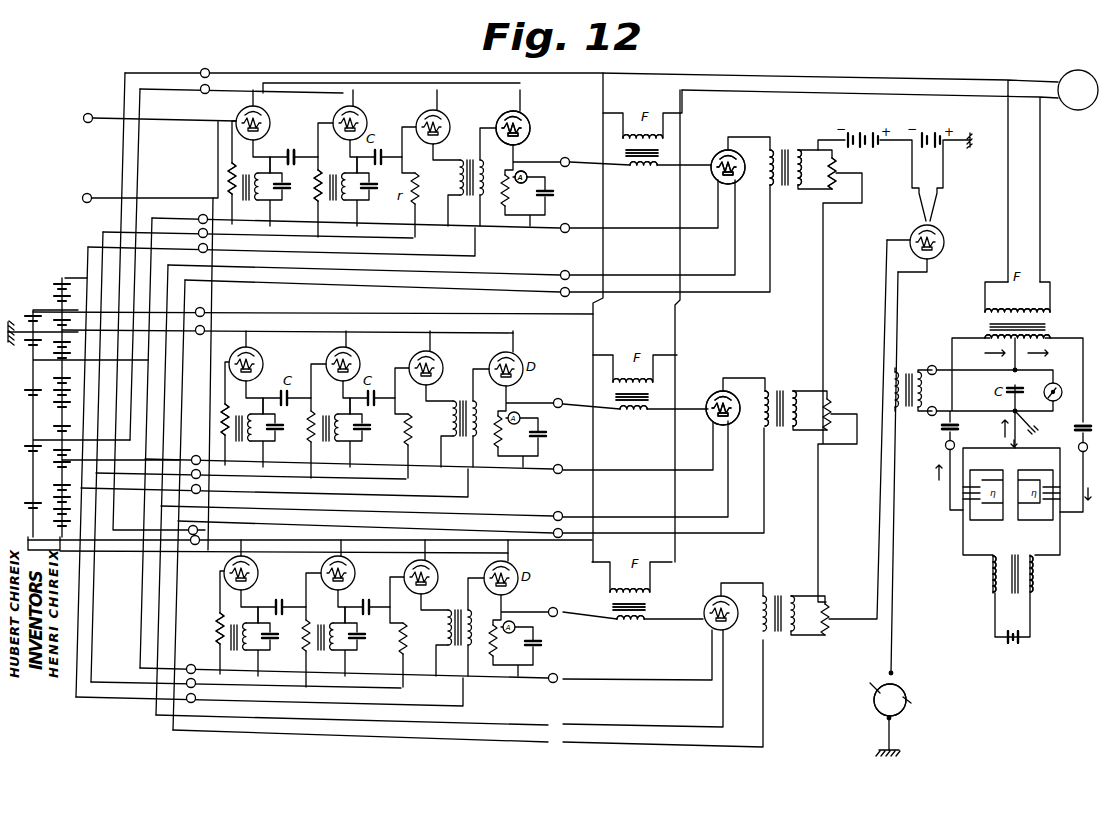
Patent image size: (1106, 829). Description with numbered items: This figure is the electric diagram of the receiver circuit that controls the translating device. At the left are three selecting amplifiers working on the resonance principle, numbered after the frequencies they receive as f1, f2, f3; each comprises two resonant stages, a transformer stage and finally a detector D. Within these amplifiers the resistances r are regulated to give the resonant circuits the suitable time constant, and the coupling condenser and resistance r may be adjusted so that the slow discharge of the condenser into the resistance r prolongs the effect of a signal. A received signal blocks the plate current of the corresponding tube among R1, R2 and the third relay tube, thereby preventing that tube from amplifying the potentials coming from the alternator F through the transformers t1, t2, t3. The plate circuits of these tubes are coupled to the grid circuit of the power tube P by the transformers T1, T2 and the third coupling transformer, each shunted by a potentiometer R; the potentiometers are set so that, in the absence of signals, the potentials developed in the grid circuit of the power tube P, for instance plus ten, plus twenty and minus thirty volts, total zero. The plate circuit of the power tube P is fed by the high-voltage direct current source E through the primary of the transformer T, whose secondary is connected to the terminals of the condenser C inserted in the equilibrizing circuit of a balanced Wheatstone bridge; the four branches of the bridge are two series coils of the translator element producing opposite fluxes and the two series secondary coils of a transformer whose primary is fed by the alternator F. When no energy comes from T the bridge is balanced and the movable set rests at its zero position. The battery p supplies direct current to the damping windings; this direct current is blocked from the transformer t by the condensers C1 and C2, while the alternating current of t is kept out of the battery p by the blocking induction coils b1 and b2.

The resonance amplifier for first frequency f1 is at (218, 178).
The resonance amplifier for second frequency f2 is at (212, 413).
The resonance amplifier for third frequency f3 is at (209, 628).
The condenser C is at (291, 147).
The resistance r is at (312, 185).
The detector D is at (519, 128).
The ammeter A is at (521, 177).
The transformer t1 is at (643, 167).
The transformer t2 is at (633, 409).
The transformer t3 is at (630, 618).
The tube R1 is at (738, 168).
The tube R2 is at (734, 413).
The transformer T1 is at (786, 158).
The transformer T2 is at (781, 399).
The potentiometer R is at (825, 173).
The power tube P is at (933, 242).
The alternator F is at (1078, 90).
The transformer t is at (1017, 315).
The transformer T is at (908, 378).
The condenser C1 is at (961, 431).
The condenser C2 is at (1090, 419).
The blocking induction coil b1 is at (986, 574).
The blocking induction coil b2 is at (1043, 574).
The battery p is at (1012, 647).
The high-voltage direct current source E is at (890, 700).